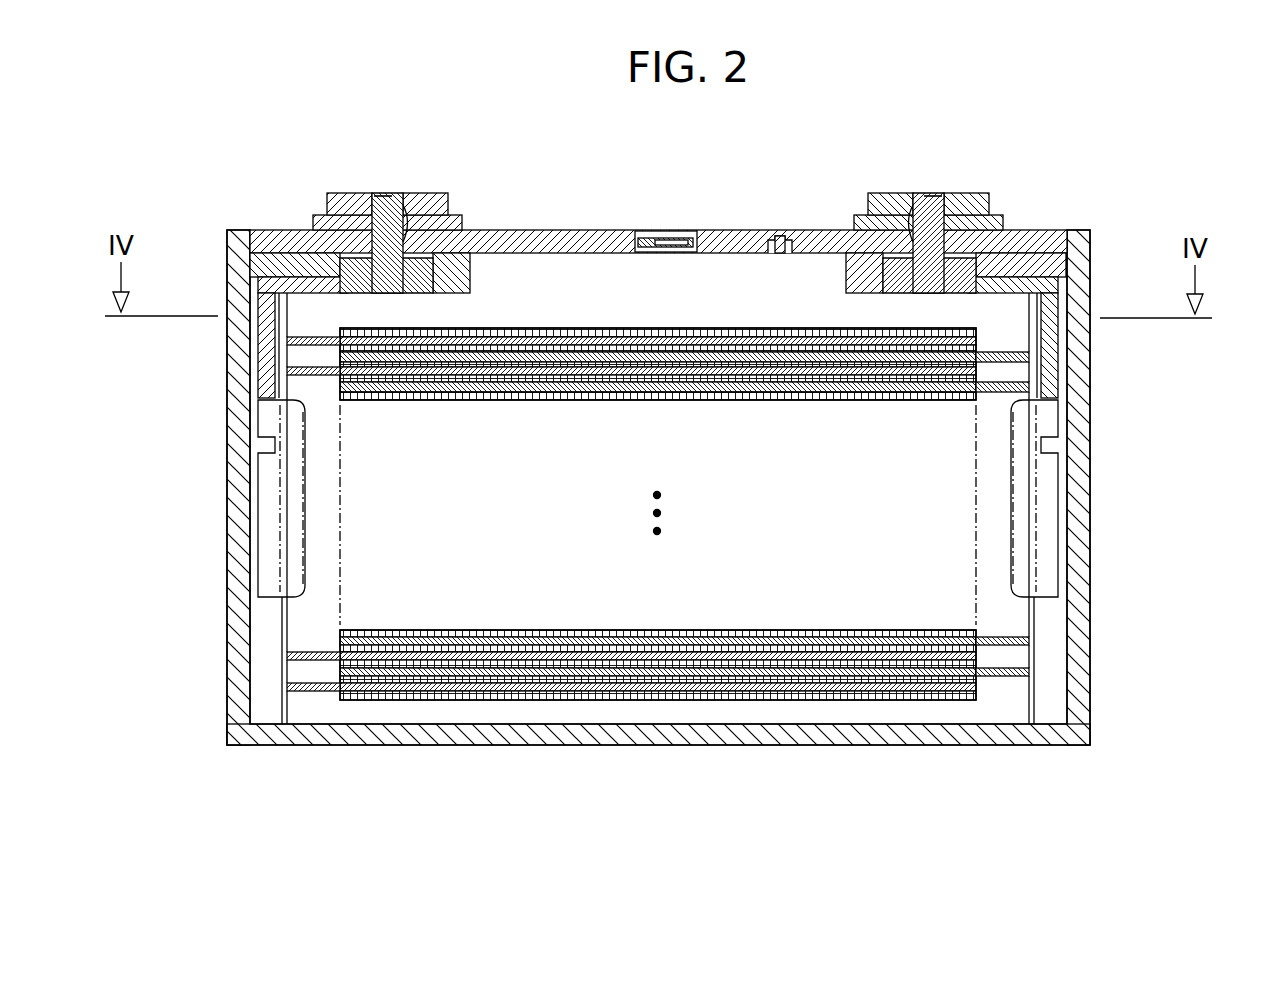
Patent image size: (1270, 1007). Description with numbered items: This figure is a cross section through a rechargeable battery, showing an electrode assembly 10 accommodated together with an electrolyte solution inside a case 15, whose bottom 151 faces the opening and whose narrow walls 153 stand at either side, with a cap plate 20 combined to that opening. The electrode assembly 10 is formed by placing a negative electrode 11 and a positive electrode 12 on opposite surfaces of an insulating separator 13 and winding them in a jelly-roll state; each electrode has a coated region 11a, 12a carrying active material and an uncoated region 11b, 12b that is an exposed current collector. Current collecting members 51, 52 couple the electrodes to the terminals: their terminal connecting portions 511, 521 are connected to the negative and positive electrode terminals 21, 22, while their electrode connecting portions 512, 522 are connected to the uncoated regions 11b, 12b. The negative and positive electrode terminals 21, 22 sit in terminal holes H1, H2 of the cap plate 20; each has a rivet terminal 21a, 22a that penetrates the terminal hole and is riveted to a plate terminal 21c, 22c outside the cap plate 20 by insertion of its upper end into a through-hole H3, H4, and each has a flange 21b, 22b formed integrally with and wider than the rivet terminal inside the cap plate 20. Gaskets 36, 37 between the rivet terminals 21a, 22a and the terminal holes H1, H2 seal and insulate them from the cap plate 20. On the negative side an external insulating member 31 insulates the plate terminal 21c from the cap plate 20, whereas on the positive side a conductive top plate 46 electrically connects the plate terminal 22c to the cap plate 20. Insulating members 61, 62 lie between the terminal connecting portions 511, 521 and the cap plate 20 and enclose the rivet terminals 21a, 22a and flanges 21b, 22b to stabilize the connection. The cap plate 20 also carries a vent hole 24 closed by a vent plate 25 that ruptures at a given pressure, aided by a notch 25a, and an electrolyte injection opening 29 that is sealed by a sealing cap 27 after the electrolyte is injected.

The electrode assembly 10 is at (658, 579).
The negative electrode 11 is at (346, 572).
The coated region of the negative electrode 11a is at (394, 691).
The uncoated region of the negative electrode 11b is at (298, 692).
The positive electrode 12 is at (964, 568).
The coated region of the positive electrode 12a is at (907, 676).
The uncoated region of the positive electrode 12b is at (1005, 676).
The separator 13 is at (640, 693).
The case 15 is at (733, 509).
The bottom 151 is at (710, 756).
The narrow walls 153 is at (1078, 655).
The cap plate 20 is at (572, 243).
The negative electrode terminal 21 is at (386, 287).
The rivet terminal 21a is at (383, 272).
The flange 21b is at (454, 270).
The plate terminal 21c is at (346, 193).
The positive electrode terminal 22 is at (929, 283).
The rivet terminal 22a is at (923, 275).
The flange 22b is at (864, 272).
The plate terminal 22c is at (971, 193).
The vent hole 24 is at (663, 253).
The vent plate 25 is at (677, 242).
The notch 25a is at (661, 240).
The sealing cap 27 is at (778, 238).
The electrolyte injection opening 29 is at (770, 235).
The external insulating member 31 is at (456, 213).
The gasket 36 is at (332, 208).
The gasket 37 is at (990, 210).
The conductive top plate 46 is at (862, 216).
The current collecting member 51 is at (202, 445).
The terminal connecting portion 511 is at (303, 294).
The electrode connecting portion 512 is at (268, 478).
The current collecting member 52 is at (1113, 445).
The terminal connecting portion 521 is at (1017, 294).
The electrode connecting portion 522 is at (1048, 483).
The insulating member 61 is at (262, 264).
The insulating member 62 is at (1055, 266).
The terminal hole H1 is at (404, 208).
The terminal hole H2 is at (914, 208).
The through-hole H3 is at (380, 193).
The through-hole H4 is at (936, 193).